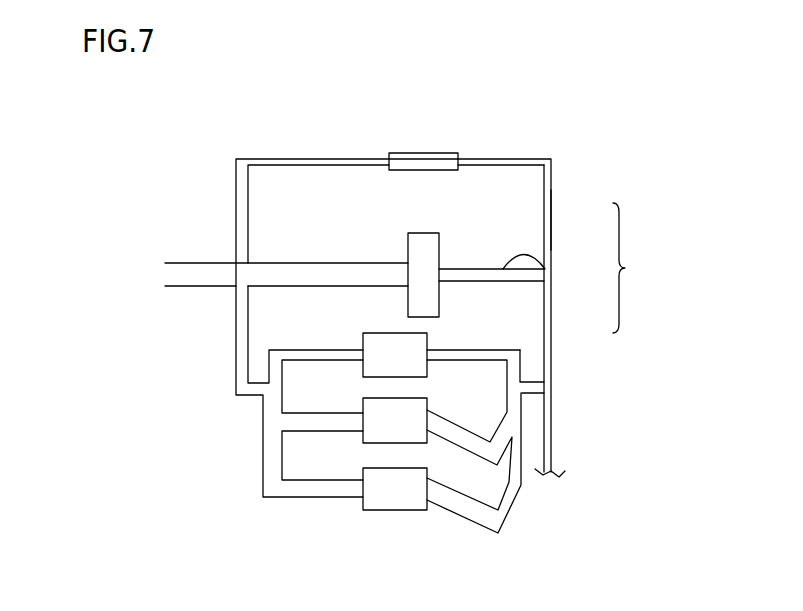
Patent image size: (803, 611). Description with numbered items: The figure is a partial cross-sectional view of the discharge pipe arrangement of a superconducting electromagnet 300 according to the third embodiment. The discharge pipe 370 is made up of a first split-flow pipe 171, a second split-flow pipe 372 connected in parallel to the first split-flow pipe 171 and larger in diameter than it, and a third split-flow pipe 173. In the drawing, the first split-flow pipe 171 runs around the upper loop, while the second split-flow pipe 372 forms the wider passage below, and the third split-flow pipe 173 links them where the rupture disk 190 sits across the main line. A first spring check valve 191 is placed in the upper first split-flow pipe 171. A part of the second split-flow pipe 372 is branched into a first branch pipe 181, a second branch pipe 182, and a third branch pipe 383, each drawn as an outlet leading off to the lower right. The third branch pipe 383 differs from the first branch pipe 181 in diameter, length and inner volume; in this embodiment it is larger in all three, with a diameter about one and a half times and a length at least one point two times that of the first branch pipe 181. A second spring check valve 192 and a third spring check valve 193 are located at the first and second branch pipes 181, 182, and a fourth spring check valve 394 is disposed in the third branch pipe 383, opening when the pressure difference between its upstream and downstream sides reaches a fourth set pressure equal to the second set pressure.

The superconducting electromagnet 300 is at (580, 140).
The first split-flow pipe 171 is at (552, 217).
The third split-flow pipe 173 is at (540, 263).
The second split-flow pipe 372 is at (530, 377).
The discharge pipe 370 is at (637, 268).
The first spring check valve 191 is at (425, 153).
The rupture disk 190 is at (425, 233).
The second spring check valve 192 is at (383, 333).
The first branch pipe 181 is at (480, 348).
The third spring check valve 193 is at (383, 398).
The second branch pipe 182 is at (465, 428).
The fourth spring check valve 394 is at (383, 468).
The third branch pipe 383 is at (462, 518).